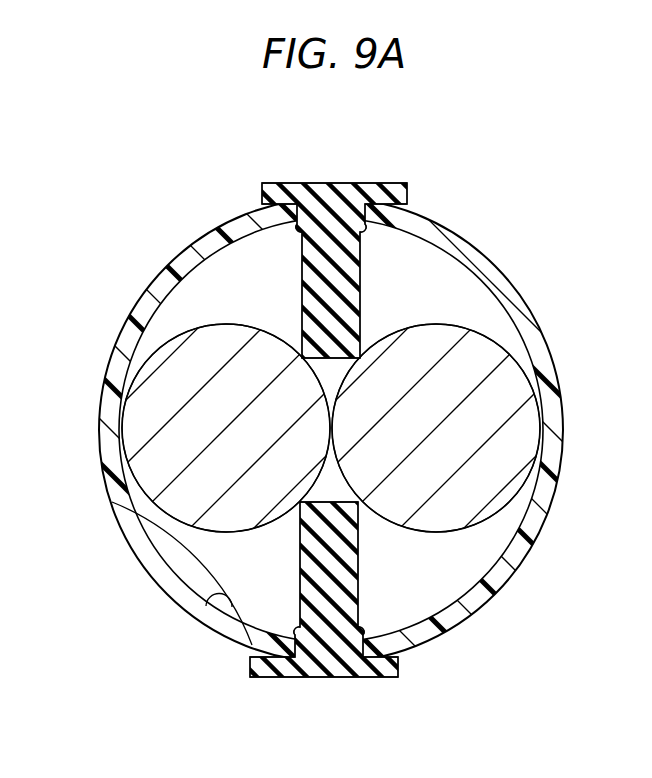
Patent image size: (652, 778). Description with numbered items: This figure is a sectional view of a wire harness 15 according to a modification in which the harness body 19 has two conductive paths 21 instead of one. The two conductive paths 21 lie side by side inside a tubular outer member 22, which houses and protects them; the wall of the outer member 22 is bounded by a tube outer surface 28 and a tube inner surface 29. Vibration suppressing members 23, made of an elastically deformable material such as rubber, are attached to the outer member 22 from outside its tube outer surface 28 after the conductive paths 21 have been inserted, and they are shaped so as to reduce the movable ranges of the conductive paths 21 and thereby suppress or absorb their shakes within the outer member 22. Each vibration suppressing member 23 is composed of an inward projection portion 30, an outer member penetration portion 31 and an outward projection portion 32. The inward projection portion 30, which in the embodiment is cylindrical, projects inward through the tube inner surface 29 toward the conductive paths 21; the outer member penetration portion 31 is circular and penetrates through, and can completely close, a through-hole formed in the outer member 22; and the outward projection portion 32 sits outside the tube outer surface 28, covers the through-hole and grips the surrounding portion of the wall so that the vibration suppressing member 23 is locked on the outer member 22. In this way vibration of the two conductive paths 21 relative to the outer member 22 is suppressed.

The wire harness 15 is at (540, 188).
The harness body 19 is at (349, 389).
The conductive path 21 is at (172, 330).
The outer member 22 is at (340, 389).
The vibration suppressing member 23 is at (377, 404).
The tube outer surface 28 is at (186, 607).
The tube inner surface 29 is at (227, 617).
The inward projection portion 30 is at (382, 265).
The outer member penetration portion 31 is at (332, 213).
The outward projection portion 32 is at (382, 265).